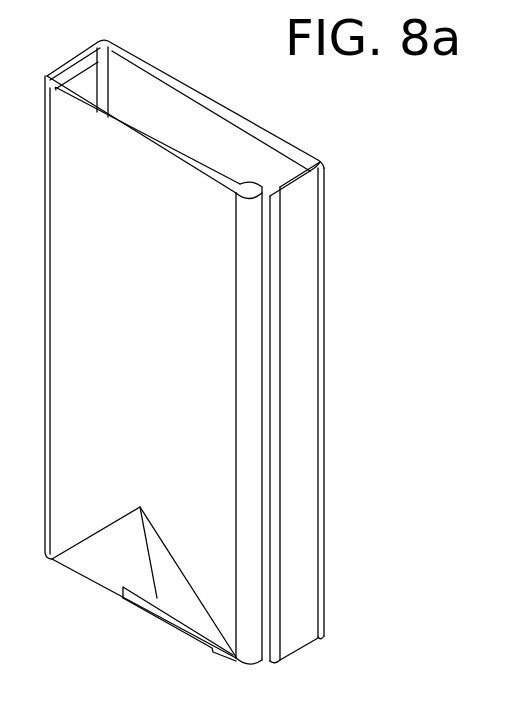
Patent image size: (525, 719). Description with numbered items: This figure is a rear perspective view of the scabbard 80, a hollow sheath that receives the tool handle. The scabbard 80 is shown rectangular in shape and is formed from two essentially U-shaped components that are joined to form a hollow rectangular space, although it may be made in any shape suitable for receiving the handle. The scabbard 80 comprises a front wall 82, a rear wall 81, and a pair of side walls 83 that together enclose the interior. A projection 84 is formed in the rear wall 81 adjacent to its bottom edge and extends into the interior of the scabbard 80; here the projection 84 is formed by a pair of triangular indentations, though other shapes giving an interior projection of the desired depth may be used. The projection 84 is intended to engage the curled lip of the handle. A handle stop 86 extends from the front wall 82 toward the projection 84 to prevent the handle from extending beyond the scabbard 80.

The scabbard 80 is at (242, 373).
The rear wall 81 is at (147, 307).
The front wall 82 is at (256, 121).
The side walls 83 is at (300, 523).
The projection 84 is at (103, 555).
The handle stop 86 is at (163, 623).